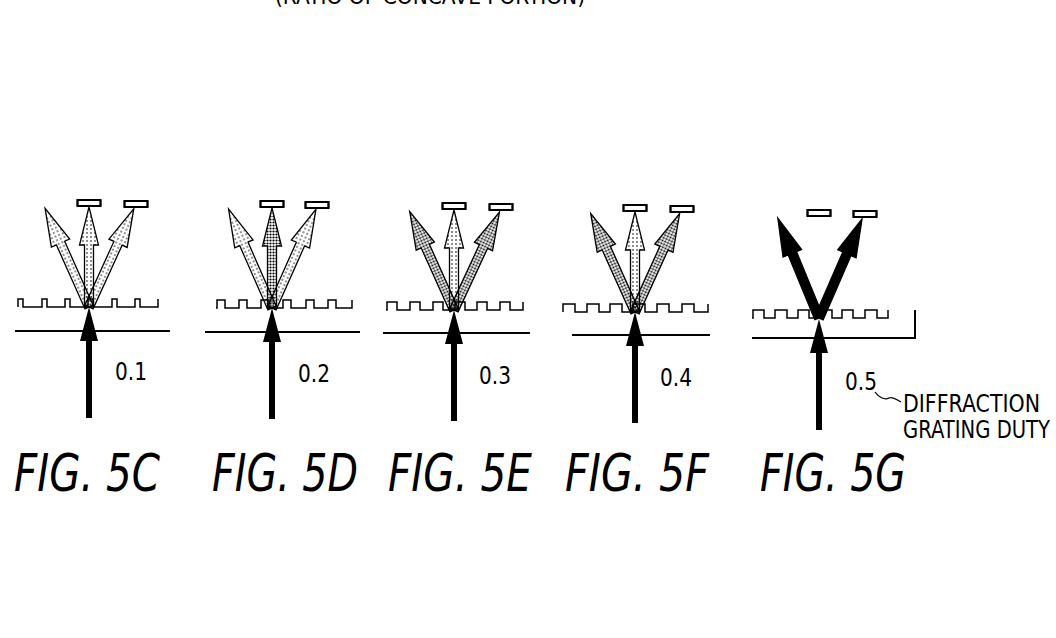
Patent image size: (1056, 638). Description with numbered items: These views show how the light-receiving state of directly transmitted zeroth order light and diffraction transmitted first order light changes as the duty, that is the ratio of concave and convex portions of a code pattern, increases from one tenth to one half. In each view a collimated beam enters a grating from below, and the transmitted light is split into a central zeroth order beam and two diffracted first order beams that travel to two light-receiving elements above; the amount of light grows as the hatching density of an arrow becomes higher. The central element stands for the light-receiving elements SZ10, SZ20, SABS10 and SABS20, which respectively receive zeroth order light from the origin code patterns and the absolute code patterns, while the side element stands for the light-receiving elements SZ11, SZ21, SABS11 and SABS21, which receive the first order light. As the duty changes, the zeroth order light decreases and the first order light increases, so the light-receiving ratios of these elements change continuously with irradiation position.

In FIG. 5C, the light-receiving element SZ20 is at (79, 196).
In FIG. 5D, the light-receiving element SZ20 is at (249, 125).
In FIG. 5E, the light-receiving element SZ20 is at (433, 126).
In FIG. 5F, the light-receiving element SZ20 is at (615, 127).
In FIG. 5G, the light-receiving element SZ20 is at (801, 130).
In FIG. 5C, the light-receiving element SZ10 is at (65, 137).
In FIG. 5D, the light-receiving element SZ10 is at (249, 137).
In FIG. 5E, the light-receiving element SZ10 is at (433, 138).
In FIG. 5F, the light-receiving element SZ10 is at (615, 140).
In FIG. 5G, the light-receiving element SZ10 is at (801, 143).
In FIG. 5C, the light-receiving element SABS20 is at (65, 149).
In FIG. 5D, the light-receiving element SABS20 is at (249, 149).
In FIG. 5E, the light-receiving element SABS20 is at (435, 150).
In FIG. 5F, the light-receiving element SABS20 is at (619, 152).
In FIG. 5G, the light-receiving element SABS20 is at (806, 155).
In FIG. 5C, the light-receiving element SABS10 is at (89, 200).
In FIG. 5D, the light-receiving element SABS10 is at (249, 162).
In FIG. 5E, the light-receiving element SABS10 is at (435, 163).
In FIG. 5F, the light-receiving element SABS10 is at (619, 164).
In FIG. 5G, the light-receiving element SABS10 is at (806, 167).
In FIG. 5C, the light-receiving element SZ21 is at (145, 196).
In FIG. 5D, the light-receiving element SZ21 is at (319, 125).
In FIG. 5E, the light-receiving element SZ21 is at (505, 126).
In FIG. 5F, the light-receiving element SZ21 is at (689, 128).
In FIG. 5G, the light-receiving element SZ21 is at (876, 131).
In FIG. 5C, the light-receiving element SZ11 is at (134, 137).
In FIG. 5D, the light-receiving element SZ11 is at (319, 138).
In FIG. 5E, the light-receiving element SZ11 is at (505, 139).
In FIG. 5F, the light-receiving element SZ11 is at (689, 140).
In FIG. 5G, the light-receiving element SZ11 is at (876, 143).
In FIG. 5C, the light-receiving element SABS21 is at (143, 149).
In FIG. 5D, the light-receiving element SABS21 is at (328, 150).
In FIG. 5E, the light-receiving element SABS21 is at (514, 151).
In FIG. 5F, the light-receiving element SABS21 is at (698, 152).
In FIG. 5G, the light-receiving element SABS21 is at (884, 155).
In FIG. 5C, the light-receiving element SABS11 is at (136, 201).
In FIG. 5D, the light-receiving element SABS11 is at (328, 162).
In FIG. 5E, the light-receiving element SABS11 is at (514, 163).
In FIG. 5F, the light-receiving element SABS11 is at (698, 165).
In FIG. 5G, the light-receiving element SABS11 is at (884, 168).